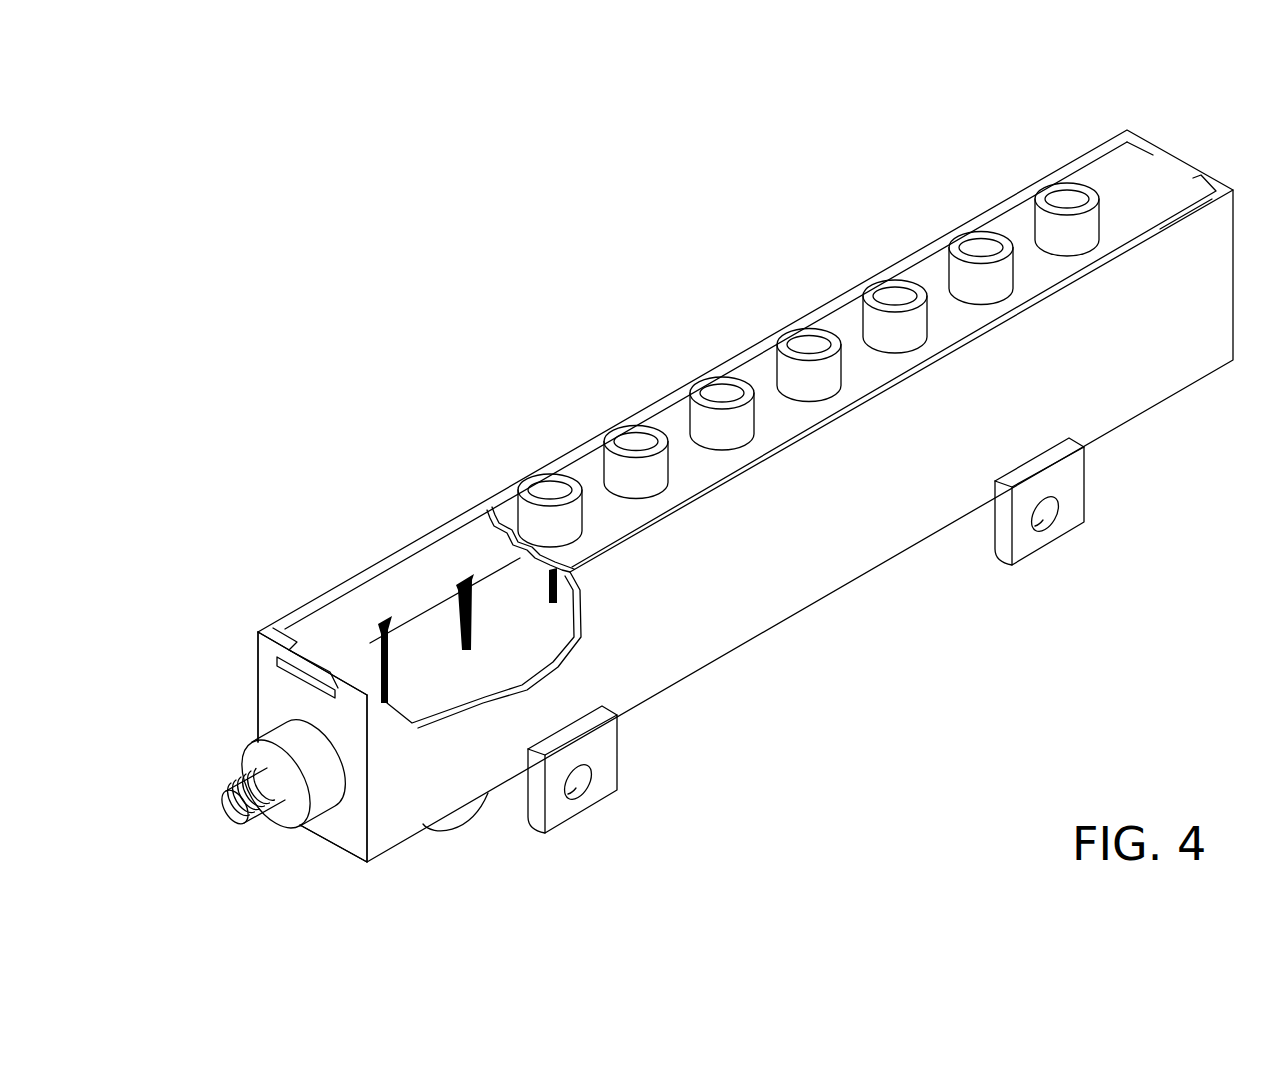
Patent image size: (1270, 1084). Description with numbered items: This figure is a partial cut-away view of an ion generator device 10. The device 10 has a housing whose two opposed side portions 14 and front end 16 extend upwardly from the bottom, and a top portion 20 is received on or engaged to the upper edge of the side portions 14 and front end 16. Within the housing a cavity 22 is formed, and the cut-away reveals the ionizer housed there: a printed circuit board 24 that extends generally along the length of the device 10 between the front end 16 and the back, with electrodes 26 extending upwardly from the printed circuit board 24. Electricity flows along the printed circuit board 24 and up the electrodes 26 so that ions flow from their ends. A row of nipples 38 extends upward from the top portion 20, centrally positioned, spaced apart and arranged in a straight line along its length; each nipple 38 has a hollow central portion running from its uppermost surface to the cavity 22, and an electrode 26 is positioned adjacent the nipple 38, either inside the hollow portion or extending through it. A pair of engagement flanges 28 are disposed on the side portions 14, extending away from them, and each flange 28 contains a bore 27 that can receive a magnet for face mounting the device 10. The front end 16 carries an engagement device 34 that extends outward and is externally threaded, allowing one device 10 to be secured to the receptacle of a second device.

The ion generator device 10 is at (705, 280).
The side portion 14 is at (424, 563).
The front end 16 is at (345, 822).
The top portion 20 is at (1153, 180).
The cavity 22 is at (477, 545).
The printed circuit board 24 is at (452, 690).
The electrode 26 is at (384, 628).
The bore 27 is at (1052, 512).
The engagement flange 28 is at (553, 810).
The engagement device 34 is at (230, 805).
The nipple 38 is at (888, 288).